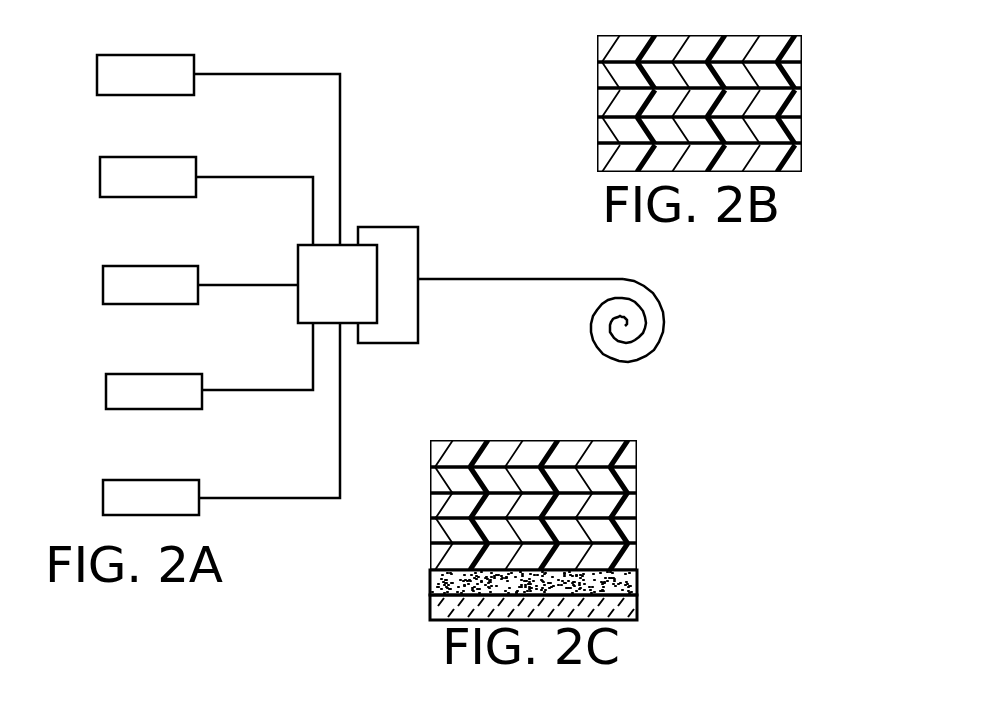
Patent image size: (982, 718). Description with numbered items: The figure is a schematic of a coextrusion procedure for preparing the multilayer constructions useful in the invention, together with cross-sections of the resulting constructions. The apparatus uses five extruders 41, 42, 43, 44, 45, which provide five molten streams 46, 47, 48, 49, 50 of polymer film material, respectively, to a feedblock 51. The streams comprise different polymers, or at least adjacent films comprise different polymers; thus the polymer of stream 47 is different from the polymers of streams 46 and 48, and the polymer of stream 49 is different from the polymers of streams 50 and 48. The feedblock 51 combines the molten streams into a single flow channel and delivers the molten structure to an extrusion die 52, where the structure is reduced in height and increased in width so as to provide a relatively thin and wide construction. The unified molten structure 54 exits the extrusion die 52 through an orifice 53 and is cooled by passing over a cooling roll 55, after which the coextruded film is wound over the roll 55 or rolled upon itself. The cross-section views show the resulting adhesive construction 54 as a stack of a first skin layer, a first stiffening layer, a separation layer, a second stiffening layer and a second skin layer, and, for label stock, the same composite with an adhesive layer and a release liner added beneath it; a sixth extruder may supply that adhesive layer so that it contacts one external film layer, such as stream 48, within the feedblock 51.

The extruder 41 is at (97, 74).
The extruder 42 is at (100, 177).
The extruder 43 is at (103, 285).
The extruder 44 is at (106, 392).
The extruder 45 is at (103, 500).
The molten stream 46 is at (267, 149).
The molten stream 47 is at (254, 199).
The molten stream 48 is at (248, 274).
The molten stream 49 is at (257, 357).
The molten stream 50 is at (269, 411).
The feedblock 51 is at (315, 268).
The extrusion die 52 is at (395, 252).
The orifice 53 is at (420, 278).
The unified molten structure 54 is at (446, 286).
The cooling roll 55 is at (632, 343).